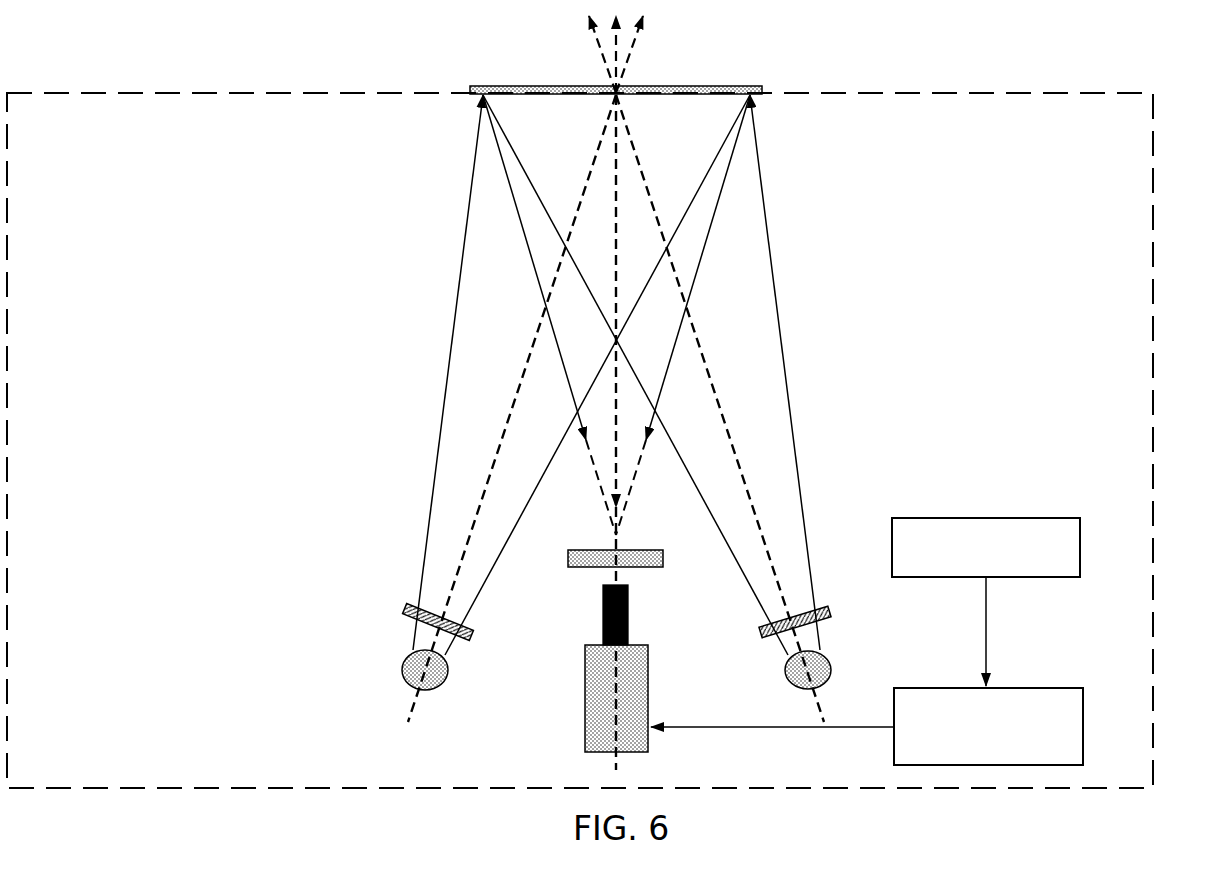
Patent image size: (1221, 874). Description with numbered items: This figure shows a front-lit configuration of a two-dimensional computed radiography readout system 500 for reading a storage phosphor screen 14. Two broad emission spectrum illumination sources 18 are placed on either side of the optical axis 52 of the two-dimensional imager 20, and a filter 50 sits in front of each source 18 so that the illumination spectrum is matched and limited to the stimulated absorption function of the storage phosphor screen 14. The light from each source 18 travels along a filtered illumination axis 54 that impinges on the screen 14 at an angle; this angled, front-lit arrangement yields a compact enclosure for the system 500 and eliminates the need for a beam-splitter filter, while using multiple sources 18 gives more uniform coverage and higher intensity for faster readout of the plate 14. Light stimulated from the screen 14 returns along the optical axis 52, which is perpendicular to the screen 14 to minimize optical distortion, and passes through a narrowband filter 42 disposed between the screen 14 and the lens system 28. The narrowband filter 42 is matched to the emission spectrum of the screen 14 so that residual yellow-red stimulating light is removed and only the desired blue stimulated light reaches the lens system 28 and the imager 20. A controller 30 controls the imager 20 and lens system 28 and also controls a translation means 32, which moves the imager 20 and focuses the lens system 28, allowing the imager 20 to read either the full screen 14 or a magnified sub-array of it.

The two-dimensional computed radiography readout system 500 is at (1103, 92).
The storage phosphor screen 14 is at (752, 87).
The optical axis 52 is at (613, 268).
The filtered illumination axis 54 is at (507, 413).
The filter 50 is at (405, 613).
The illumination source 18 is at (402, 666).
The narrowband filter 42 is at (642, 568).
The lens system 28 is at (603, 630).
The 2D imager 20 is at (648, 688).
The controller 30 is at (985, 517).
The translation means 32 is at (1055, 688).